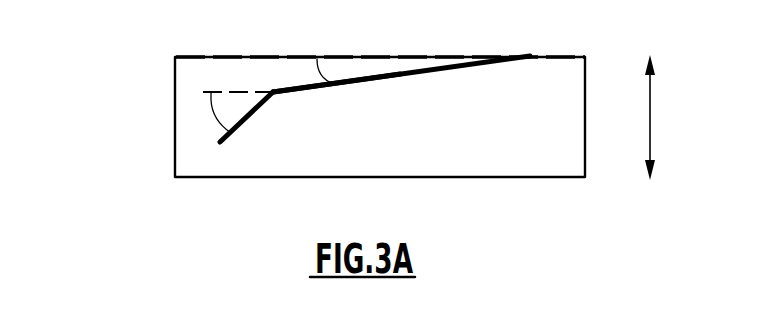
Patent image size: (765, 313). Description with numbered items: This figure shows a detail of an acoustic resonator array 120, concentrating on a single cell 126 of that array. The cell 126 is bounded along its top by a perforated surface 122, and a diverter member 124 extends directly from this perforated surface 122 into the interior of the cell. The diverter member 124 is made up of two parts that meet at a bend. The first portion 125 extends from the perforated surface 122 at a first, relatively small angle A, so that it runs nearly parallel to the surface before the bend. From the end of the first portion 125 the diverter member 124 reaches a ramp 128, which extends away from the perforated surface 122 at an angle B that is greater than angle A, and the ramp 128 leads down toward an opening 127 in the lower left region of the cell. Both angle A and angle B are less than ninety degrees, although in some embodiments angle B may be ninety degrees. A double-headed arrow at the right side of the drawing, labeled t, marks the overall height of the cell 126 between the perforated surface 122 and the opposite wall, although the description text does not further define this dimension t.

The resonator array 120 is at (313, 118).
The perforated surface 122 is at (376, 57).
The diverter member 124 is at (386, 77).
The first portion 125 is at (360, 82).
The single cell 126 is at (460, 160).
The opening 127 is at (199, 141).
The ramp 128 is at (250, 118).
The angle B is at (212, 104).
The angle A is at (333, 84).
The thickness t is at (650, 118).